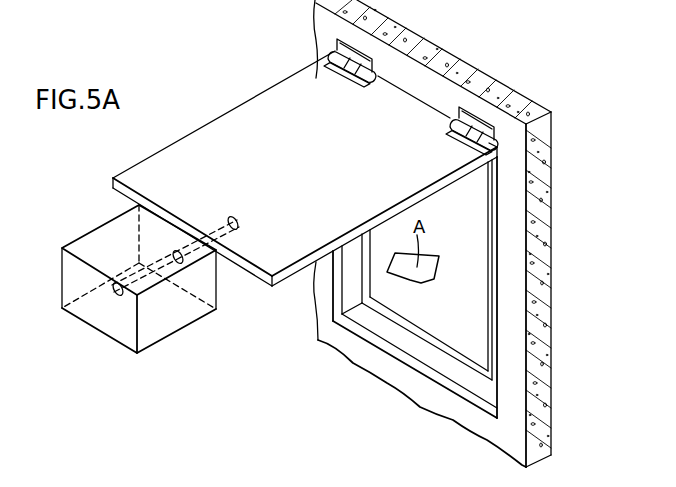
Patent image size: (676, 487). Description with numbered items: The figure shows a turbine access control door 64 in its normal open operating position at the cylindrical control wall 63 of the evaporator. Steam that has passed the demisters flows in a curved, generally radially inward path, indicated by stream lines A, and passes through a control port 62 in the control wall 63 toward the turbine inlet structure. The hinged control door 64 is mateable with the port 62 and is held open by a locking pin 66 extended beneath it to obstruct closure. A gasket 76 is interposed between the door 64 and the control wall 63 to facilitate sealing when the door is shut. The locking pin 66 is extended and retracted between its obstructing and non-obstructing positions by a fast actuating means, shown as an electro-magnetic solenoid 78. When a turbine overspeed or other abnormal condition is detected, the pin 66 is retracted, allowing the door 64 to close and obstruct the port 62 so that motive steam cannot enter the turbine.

The control port 62 is at (482, 212).
The control wall 63 is at (512, 310).
The control door 64 is at (233, 123).
The locking pin 66 is at (216, 222).
The gasket 76 is at (437, 357).
The electro-magnetic solenoid 78 is at (98, 238).